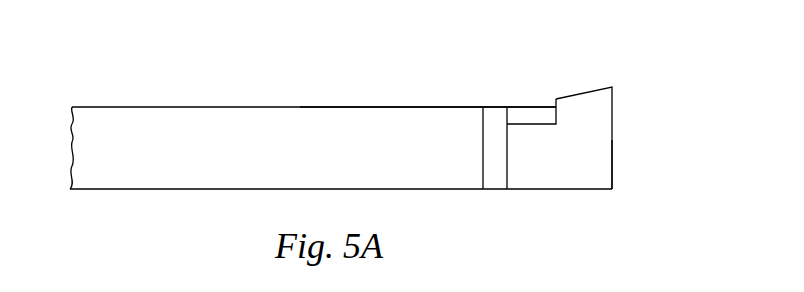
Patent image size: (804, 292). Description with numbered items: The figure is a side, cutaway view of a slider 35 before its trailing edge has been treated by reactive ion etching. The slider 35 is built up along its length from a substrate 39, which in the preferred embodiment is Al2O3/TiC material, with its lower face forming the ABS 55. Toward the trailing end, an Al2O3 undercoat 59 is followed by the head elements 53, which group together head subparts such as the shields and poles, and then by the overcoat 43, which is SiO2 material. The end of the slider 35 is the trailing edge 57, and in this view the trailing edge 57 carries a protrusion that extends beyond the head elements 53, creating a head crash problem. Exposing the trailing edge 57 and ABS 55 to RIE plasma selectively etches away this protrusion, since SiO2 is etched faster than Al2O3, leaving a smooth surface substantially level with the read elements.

The slider 35 is at (108, 60).
The substrate 39 is at (215, 137).
The ABS 55 is at (372, 104).
The Al2O3 undercoat 59 is at (497, 184).
The head elements 53 is at (527, 105).
The overcoat 43 is at (592, 142).
The trailing edge 57 is at (613, 166).